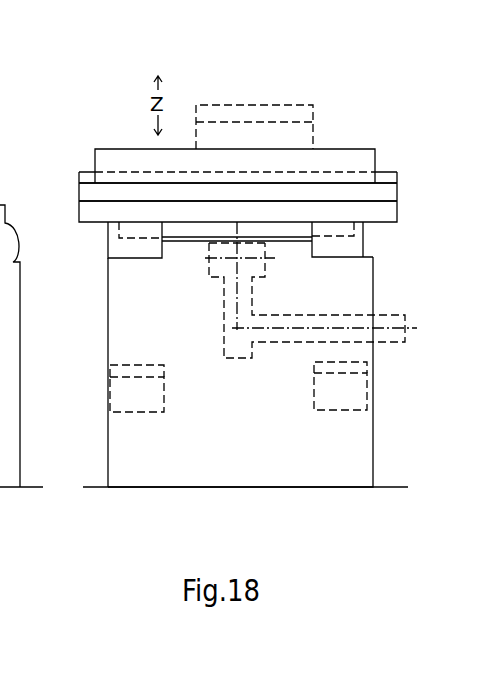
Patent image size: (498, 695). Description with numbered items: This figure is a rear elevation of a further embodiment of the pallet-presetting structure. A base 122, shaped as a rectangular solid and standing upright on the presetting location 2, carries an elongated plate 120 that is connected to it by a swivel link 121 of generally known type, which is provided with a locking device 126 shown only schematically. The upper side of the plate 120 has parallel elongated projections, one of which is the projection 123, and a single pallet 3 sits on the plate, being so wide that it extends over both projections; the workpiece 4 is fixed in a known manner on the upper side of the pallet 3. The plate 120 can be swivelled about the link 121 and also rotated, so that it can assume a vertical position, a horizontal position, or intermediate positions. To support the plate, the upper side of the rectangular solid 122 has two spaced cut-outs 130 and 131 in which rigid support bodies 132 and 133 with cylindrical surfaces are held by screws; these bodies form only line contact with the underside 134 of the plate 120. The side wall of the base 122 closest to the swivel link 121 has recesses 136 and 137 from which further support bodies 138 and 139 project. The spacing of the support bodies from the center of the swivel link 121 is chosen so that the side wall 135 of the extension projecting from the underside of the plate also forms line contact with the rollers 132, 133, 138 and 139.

The presetting location 2 is at (204, 510).
The pallet 3 is at (330, 160).
The workpiece 4 is at (305, 135).
The plate 120 is at (363, 207).
The swivel link 121 is at (236, 224).
The base 122 is at (327, 458).
The elongated projection 123 is at (85, 177).
The locking device 126 is at (292, 327).
The cut-out 130 is at (118, 262).
The cut-out 131 is at (362, 253).
The support body 132 is at (115, 235).
The support body 133 is at (357, 235).
The underside of the plate 134 is at (98, 224).
The side wall of the extension 135 is at (2, 199).
The recess 136 is at (111, 368).
The recess 137 is at (365, 365).
The support body 138 is at (123, 395).
The support body 139 is at (353, 403).